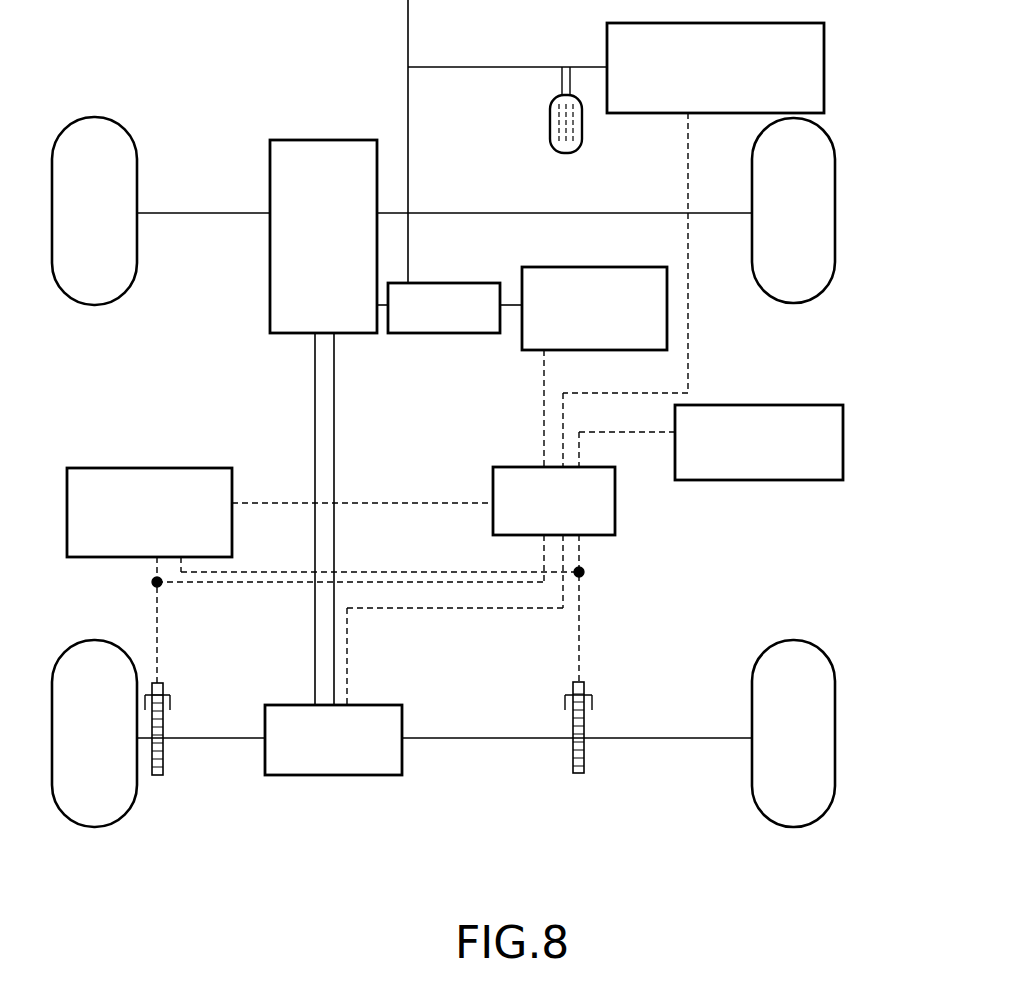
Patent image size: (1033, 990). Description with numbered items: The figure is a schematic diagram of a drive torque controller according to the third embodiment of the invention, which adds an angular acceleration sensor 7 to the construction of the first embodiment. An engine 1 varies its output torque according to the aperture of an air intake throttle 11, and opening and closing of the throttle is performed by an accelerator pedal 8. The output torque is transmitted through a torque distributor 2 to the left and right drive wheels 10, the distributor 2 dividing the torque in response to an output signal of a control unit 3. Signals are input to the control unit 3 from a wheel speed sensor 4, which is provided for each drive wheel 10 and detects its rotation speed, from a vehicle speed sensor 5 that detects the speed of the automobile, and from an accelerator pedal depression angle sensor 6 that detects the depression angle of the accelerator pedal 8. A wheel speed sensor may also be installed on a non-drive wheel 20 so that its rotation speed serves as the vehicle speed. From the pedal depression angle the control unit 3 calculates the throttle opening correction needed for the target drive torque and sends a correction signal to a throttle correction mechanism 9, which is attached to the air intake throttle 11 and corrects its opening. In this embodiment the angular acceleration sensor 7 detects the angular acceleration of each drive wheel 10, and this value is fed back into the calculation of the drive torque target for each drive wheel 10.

The engine 1 is at (270, 262).
The torque distributor 2 is at (320, 775).
The control unit 3 is at (596, 535).
The wheel speed sensor 4 is at (163, 748).
The vehicle speed sensor 5 is at (843, 443).
The accelerator pedal depression angle sensor 6 is at (824, 78).
The angular acceleration sensor 7 is at (167, 468).
The accelerator pedal 8 is at (550, 118).
The throttle correction mechanism 9 is at (530, 350).
The drive wheel 10 is at (835, 708).
The air intake throttle 11 is at (433, 333).
The non-drive wheel 20 is at (835, 217).